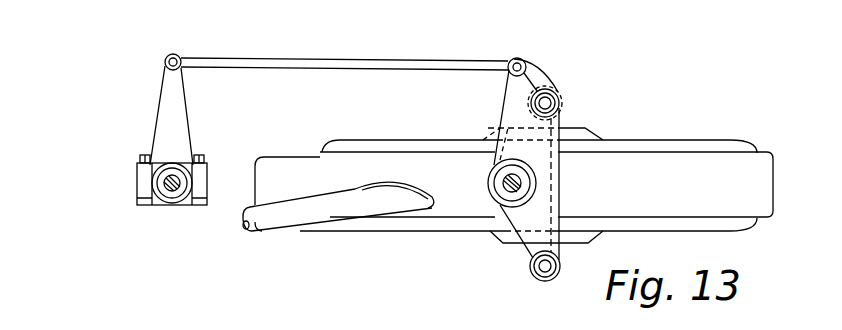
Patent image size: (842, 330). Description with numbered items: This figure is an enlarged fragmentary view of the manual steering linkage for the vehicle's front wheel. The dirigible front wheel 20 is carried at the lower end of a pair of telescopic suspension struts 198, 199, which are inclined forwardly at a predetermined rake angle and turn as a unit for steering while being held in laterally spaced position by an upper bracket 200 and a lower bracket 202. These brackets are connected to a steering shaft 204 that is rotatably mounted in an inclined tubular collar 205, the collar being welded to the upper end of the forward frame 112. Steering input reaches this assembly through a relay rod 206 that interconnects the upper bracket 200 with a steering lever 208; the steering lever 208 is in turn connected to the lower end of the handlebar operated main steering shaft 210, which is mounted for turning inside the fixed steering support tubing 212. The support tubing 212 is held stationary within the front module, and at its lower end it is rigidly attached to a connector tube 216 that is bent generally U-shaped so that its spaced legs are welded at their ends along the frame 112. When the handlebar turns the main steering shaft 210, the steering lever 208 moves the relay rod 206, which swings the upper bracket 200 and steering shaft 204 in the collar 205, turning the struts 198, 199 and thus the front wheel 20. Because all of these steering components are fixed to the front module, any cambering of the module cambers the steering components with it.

The dirigible front wheel 20 is at (733, 173).
The forward frame 112 is at (470, 200).
The telescopic suspension strut 198 is at (537, 283).
The telescopic suspension strut 199 is at (562, 92).
The upper bracket 200 is at (530, 74).
The lower bracket 202 is at (530, 117).
The steering shaft 204 is at (524, 180).
The tubular collar 205 is at (532, 198).
The relay rod 206 is at (322, 58).
The steering lever 208 is at (165, 107).
The main steering shaft 210 is at (177, 191).
The steering support tubing 212 is at (165, 203).
The connector tube 216 is at (302, 208).